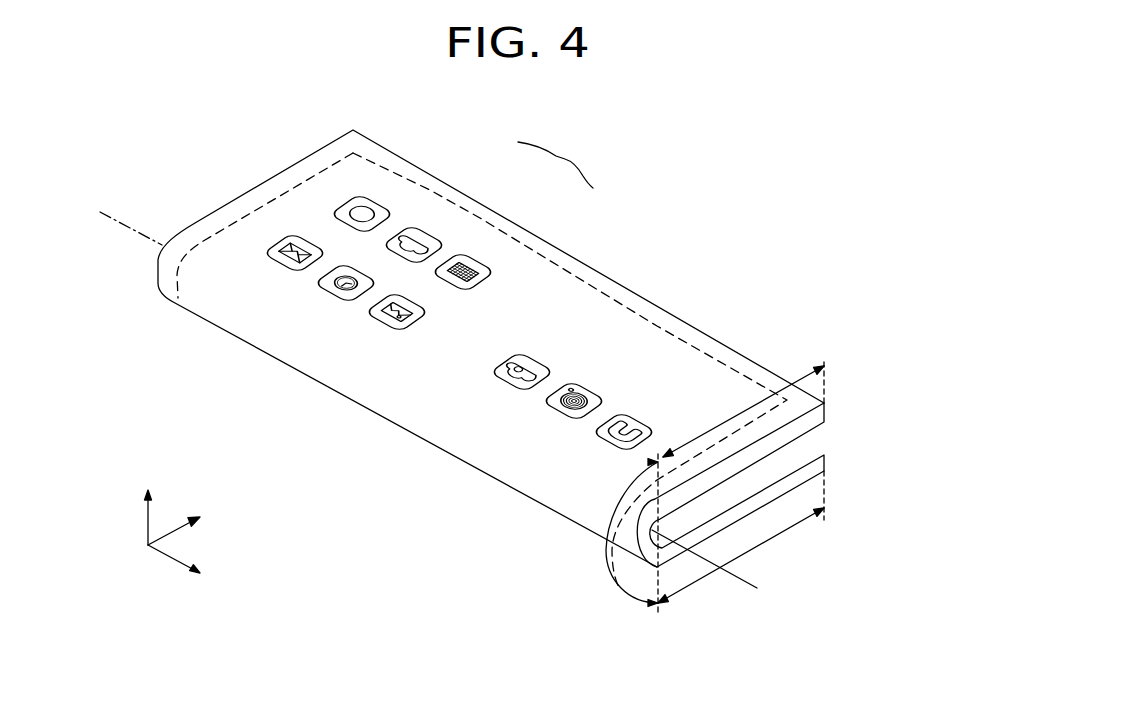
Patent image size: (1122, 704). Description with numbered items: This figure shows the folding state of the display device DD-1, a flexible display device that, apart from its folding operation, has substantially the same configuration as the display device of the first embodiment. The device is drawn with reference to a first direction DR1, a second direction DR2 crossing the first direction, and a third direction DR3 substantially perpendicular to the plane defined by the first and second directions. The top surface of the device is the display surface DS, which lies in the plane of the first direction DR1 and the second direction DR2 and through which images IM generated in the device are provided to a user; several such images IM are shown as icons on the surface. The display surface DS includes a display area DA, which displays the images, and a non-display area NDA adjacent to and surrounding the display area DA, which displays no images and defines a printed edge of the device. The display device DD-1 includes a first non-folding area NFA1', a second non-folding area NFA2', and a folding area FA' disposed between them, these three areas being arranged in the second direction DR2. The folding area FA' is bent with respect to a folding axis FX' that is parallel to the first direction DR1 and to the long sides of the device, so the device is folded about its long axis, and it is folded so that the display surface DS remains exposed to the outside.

The display device DD-1 is at (773, 182).
The non-display area NDA is at (503, 230).
The display area DA is at (522, 290).
The display surface DS is at (557, 158).
The images IM is at (278, 242).
The second non-folding area NFA2' is at (743, 409).
The first non-folding area NFA1' is at (750, 537).
The folding area FA' is at (606, 533).
The folding axis FX' is at (724, 571).
The first direction DR1 is at (195, 570).
The second direction DR2 is at (195, 523).
The third direction DR3 is at (146, 505).